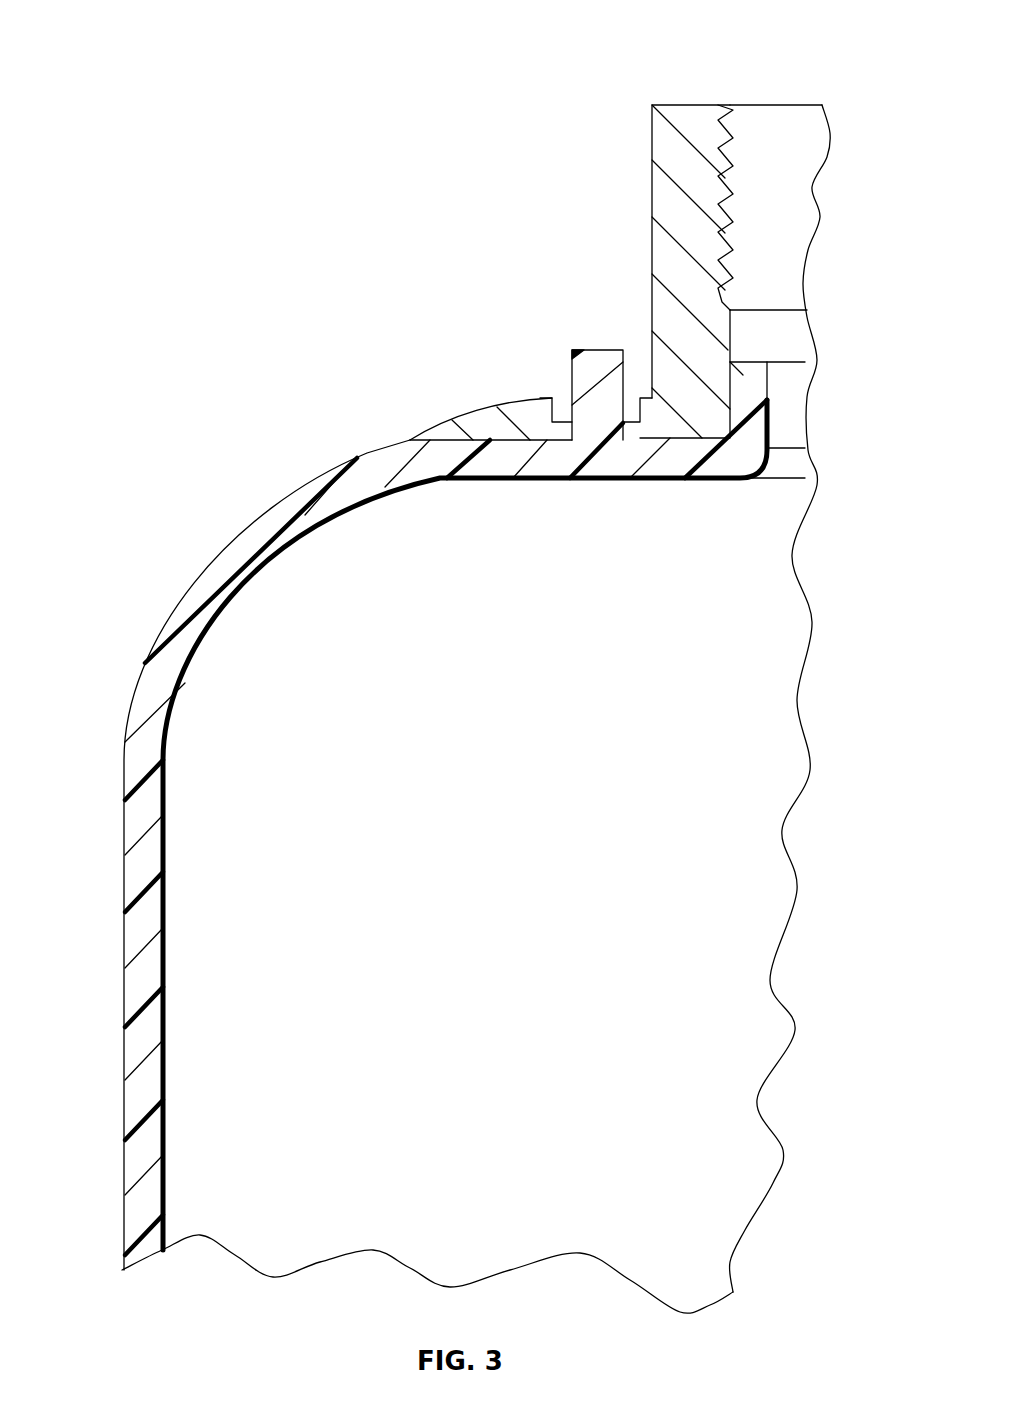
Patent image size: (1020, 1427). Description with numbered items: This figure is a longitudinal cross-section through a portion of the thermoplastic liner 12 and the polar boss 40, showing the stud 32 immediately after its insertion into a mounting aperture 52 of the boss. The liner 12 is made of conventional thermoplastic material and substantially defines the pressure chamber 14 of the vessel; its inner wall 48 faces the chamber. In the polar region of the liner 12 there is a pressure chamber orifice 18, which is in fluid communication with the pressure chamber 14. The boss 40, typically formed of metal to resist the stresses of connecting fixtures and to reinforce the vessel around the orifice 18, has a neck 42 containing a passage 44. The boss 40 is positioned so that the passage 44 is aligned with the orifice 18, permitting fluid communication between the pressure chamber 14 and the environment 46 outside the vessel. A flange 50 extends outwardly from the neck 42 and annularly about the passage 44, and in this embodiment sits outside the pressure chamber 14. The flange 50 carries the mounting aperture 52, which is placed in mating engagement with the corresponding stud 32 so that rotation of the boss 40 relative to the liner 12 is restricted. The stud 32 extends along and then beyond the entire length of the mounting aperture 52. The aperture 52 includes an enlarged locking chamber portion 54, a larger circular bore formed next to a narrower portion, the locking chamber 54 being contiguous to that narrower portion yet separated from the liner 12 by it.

The thermoplastic liner 12 is at (137, 932).
The pressure chamber 14 is at (519, 791).
The pressure chamber orifice 18 is at (793, 405).
The stud 32 is at (597, 367).
The boss 40 is at (620, 94).
The neck 42 is at (677, 205).
The passage 44 is at (770, 120).
The environment 46 is at (752, 45).
The inner wall 48 is at (580, 478).
The flange 50 is at (495, 423).
The mounting aperture 52 is at (560, 412).
The locking chamber portion 54 is at (632, 412).